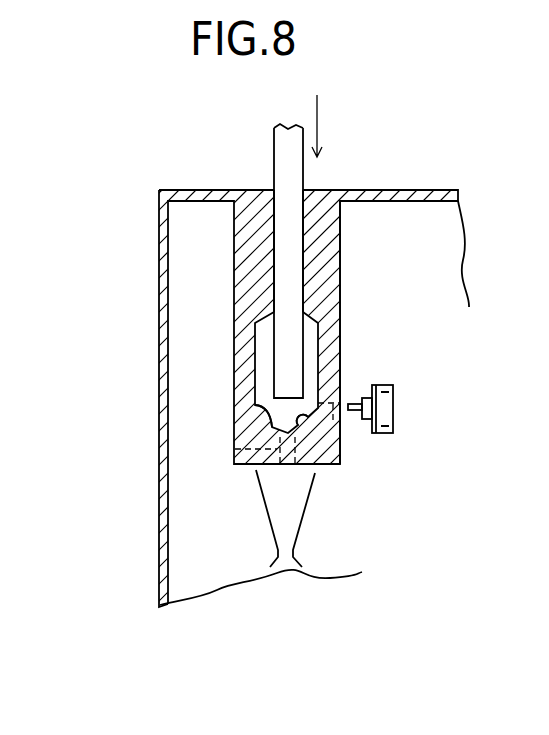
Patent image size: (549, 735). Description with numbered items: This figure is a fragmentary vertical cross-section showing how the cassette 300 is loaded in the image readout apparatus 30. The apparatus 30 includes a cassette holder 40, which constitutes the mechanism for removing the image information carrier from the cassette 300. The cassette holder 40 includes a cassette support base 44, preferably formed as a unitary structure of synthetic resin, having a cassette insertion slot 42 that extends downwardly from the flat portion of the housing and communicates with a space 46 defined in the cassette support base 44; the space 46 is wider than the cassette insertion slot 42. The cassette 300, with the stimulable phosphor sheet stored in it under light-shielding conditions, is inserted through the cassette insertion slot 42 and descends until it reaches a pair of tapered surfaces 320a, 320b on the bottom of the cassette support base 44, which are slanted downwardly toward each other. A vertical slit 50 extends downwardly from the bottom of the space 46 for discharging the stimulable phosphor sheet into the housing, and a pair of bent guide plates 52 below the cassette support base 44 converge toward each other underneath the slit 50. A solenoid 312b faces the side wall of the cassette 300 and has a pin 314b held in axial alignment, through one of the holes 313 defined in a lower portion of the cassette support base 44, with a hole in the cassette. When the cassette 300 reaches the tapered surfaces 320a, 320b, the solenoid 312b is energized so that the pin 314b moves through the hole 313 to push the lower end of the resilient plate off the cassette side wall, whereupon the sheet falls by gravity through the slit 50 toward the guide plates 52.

The image readout apparatus 30 is at (137, 312).
The cassette holder 40 is at (252, 190).
The cassette insertion slot 42 is at (307, 228).
The cassette support base 44 is at (338, 284).
The space 46 is at (263, 388).
The vertical slit 50 is at (235, 449).
The guide plates 52 is at (300, 532).
The cassette 300 is at (270, 160).
The solenoid 312b is at (392, 407).
The holes 313 is at (342, 434).
The pin 314b is at (350, 405).
The tapered surface 320a is at (259, 410).
The tapered surface 320b is at (306, 417).